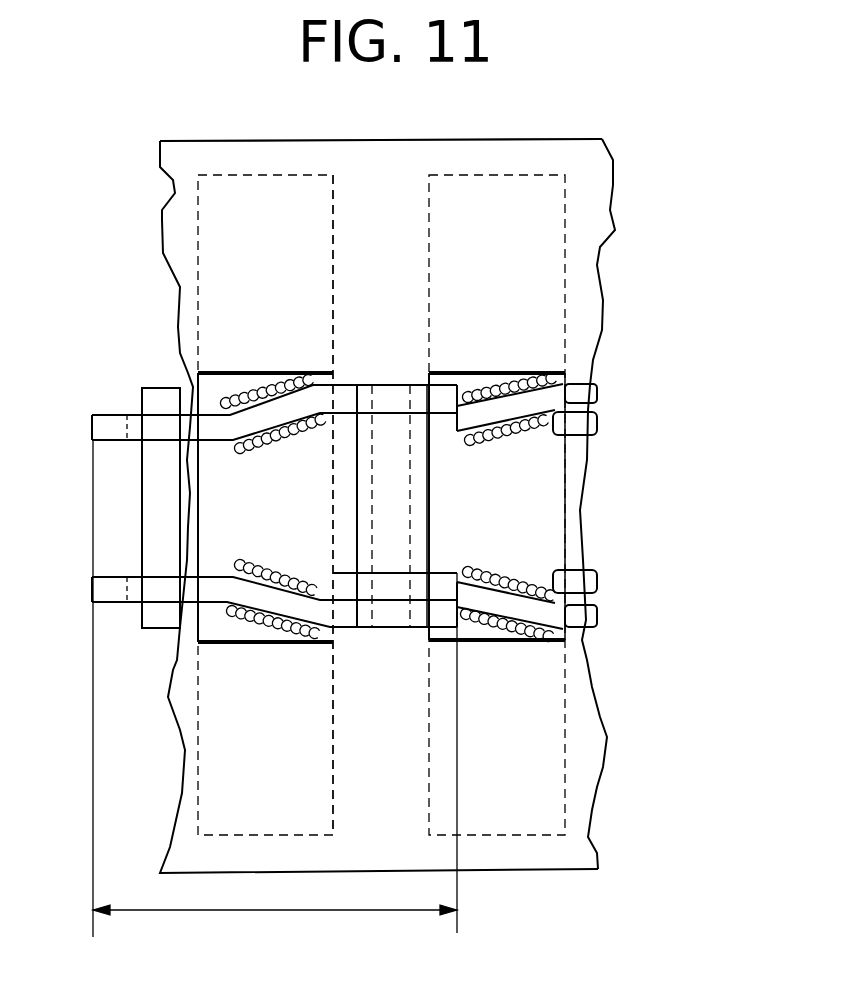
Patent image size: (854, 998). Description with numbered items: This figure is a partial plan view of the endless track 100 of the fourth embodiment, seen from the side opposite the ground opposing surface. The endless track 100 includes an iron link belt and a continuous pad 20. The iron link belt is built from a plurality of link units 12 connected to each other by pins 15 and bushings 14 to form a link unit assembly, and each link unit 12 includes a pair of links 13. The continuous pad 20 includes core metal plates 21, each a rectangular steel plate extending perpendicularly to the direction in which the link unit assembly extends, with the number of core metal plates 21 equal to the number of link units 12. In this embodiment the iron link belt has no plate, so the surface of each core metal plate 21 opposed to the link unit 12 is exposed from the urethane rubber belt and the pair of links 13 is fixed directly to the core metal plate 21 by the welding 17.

The link unit 12 is at (235, 912).
The link 13 is at (98, 415).
The bushing 14 is at (357, 503).
The pin 15 is at (157, 527).
The welding 17 is at (302, 373).
The continuous pad 20 is at (617, 186).
The core metal plate 21 is at (223, 373).
The endless track 100 is at (523, 139).